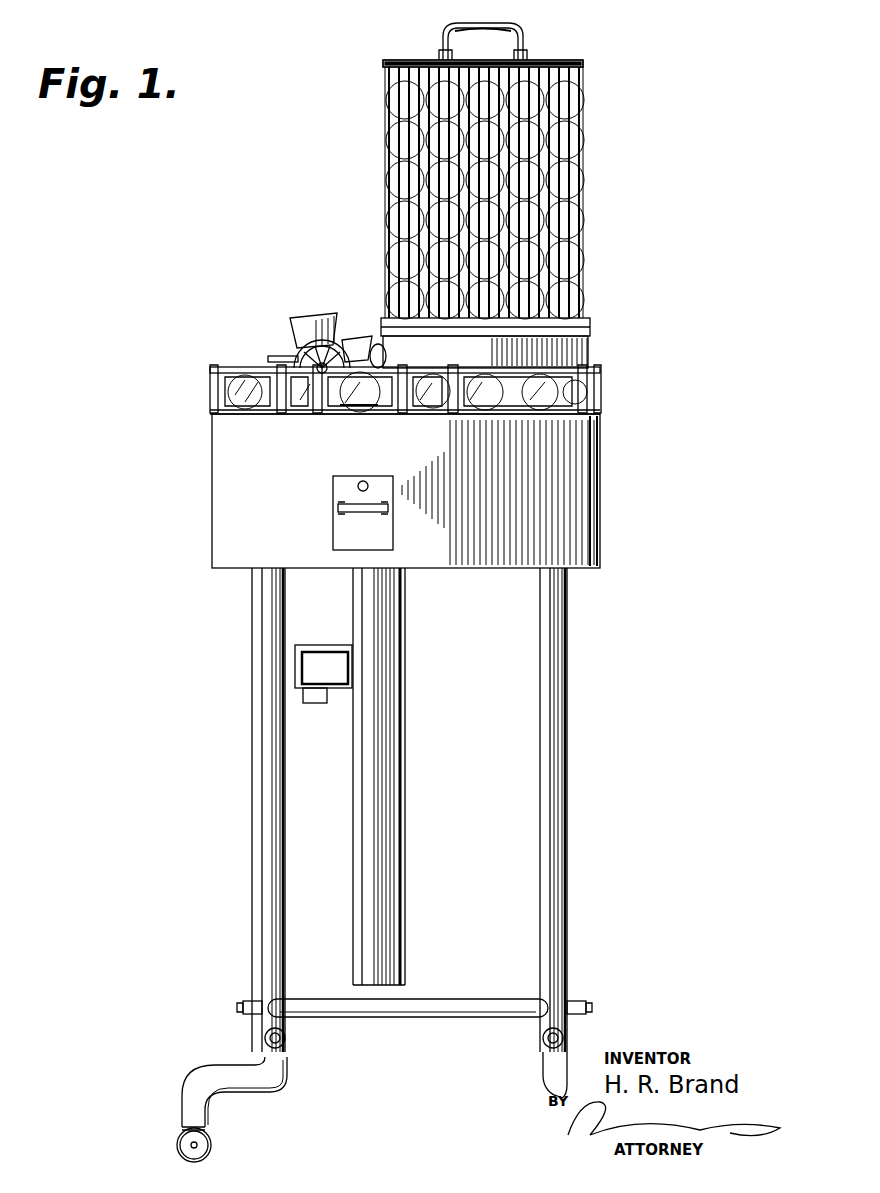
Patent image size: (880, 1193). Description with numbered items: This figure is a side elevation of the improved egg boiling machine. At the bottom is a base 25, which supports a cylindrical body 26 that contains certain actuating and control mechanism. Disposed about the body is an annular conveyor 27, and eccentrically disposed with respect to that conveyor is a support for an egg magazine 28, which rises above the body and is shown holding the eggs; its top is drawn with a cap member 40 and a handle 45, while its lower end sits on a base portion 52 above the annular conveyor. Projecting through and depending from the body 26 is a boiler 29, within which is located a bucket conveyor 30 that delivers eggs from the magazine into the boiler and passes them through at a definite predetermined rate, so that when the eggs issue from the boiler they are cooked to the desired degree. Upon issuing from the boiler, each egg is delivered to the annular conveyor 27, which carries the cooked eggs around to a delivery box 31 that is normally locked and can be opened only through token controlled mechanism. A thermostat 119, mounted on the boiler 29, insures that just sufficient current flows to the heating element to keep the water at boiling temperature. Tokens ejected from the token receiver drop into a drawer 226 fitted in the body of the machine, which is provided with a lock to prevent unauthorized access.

The base 25 is at (567, 651).
The cylindrical body 26 is at (612, 477).
The annular conveyor 27 is at (611, 397).
The egg magazine 28 is at (596, 192).
The boiler 29 is at (406, 694).
The bucket conveyor 30 is at (343, 311).
The delivery box 31 is at (338, 400).
The cage top bar 40 is at (583, 79).
The handle 45 is at (445, 33).
The cage base 52 is at (592, 330).
The thermostat 119 is at (318, 660).
The drawer 226 is at (338, 532).